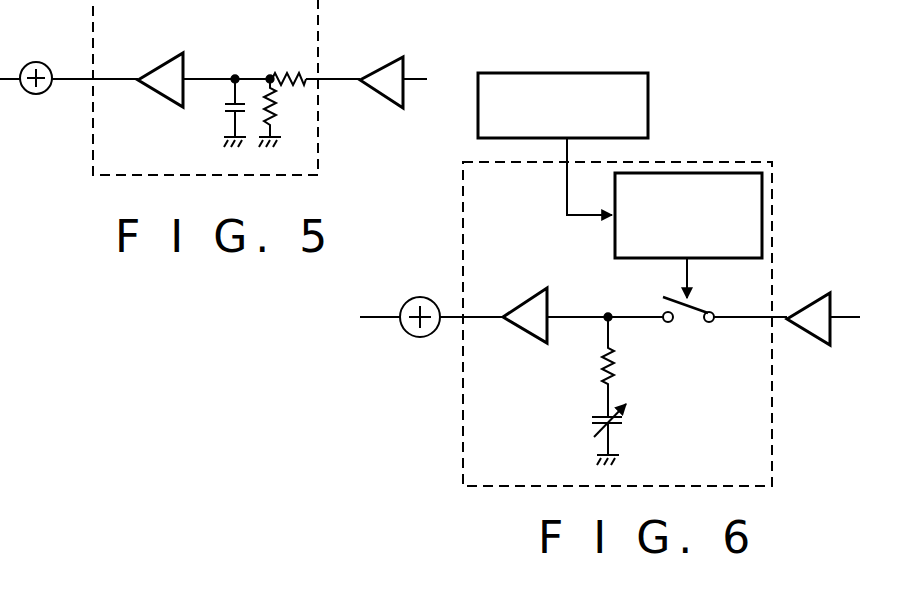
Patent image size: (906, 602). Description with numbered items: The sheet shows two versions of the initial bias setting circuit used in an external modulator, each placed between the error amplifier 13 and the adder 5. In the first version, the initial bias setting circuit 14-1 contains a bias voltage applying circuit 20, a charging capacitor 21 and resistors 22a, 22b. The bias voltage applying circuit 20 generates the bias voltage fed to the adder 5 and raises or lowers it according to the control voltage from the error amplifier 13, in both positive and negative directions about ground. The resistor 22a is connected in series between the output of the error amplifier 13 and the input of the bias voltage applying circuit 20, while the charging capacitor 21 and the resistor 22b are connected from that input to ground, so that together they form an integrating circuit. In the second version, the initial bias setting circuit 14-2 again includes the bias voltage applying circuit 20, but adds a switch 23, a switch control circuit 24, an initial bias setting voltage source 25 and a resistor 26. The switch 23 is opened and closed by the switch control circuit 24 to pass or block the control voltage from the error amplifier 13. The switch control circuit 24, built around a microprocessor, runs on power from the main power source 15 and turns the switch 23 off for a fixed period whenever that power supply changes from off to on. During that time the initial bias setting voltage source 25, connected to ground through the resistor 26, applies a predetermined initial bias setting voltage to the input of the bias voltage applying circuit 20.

In FIG. 5, the adder 5 is at (26, 96).
In FIG. 6, the adder 5 is at (411, 337).
In FIG. 5, the error amplifier 13 is at (380, 100).
In FIG. 6, the error amplifier 13 is at (800, 332).
In FIG. 5, the initial bias setting circuit 14-1 is at (318, 26).
In FIG. 6, the initial bias setting circuit 14-2 is at (772, 200).
In FIG. 6, the main power source 15 is at (648, 112).
In FIG. 5, the bias voltage applying circuit 20 is at (160, 64).
In FIG. 6, the bias voltage applying circuit 20 is at (512, 328).
In FIG. 5, the charging capacitor 21 is at (222, 114).
In FIG. 5, the resistor 22a is at (290, 72).
In FIG. 5, the resistor 22b is at (277, 100).
In FIG. 6, the switch 23 is at (708, 304).
In FIG. 6, the switch control circuit 24 is at (615, 246).
In FIG. 6, the initial bias setting voltage source 25 is at (625, 426).
In FIG. 6, the resistor 26 is at (620, 366).